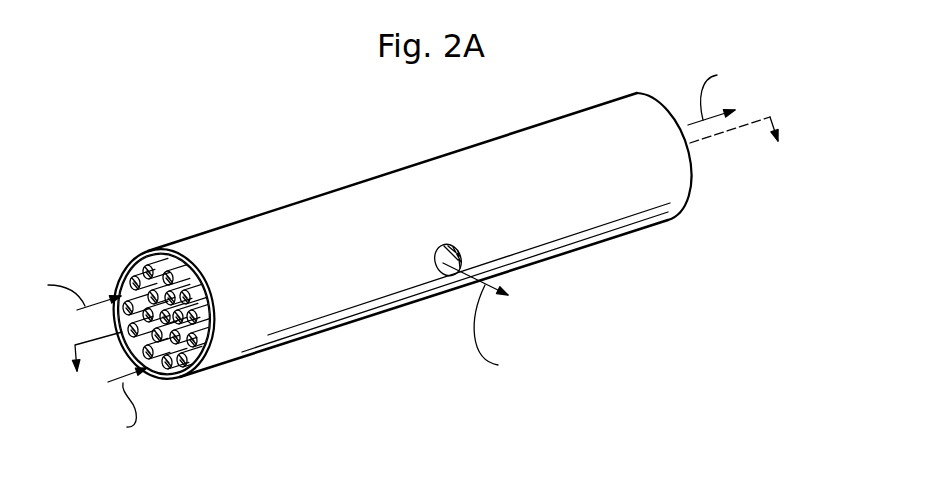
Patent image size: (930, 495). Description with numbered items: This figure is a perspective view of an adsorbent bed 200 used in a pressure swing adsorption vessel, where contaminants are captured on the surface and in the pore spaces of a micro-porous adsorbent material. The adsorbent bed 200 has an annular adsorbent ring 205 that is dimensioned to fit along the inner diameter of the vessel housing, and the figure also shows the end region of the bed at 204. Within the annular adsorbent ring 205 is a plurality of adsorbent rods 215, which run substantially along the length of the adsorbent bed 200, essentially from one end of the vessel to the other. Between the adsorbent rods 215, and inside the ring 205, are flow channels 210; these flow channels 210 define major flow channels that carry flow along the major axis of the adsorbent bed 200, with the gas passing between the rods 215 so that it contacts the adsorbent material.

The adsorbent bed 200 is at (210, 185).
The end cap 204 is at (660, 100).
The annular adsorbent ring 205 is at (403, 182).
The flow channels 210 is at (128, 266).
The adsorbent rods 215 is at (157, 272).